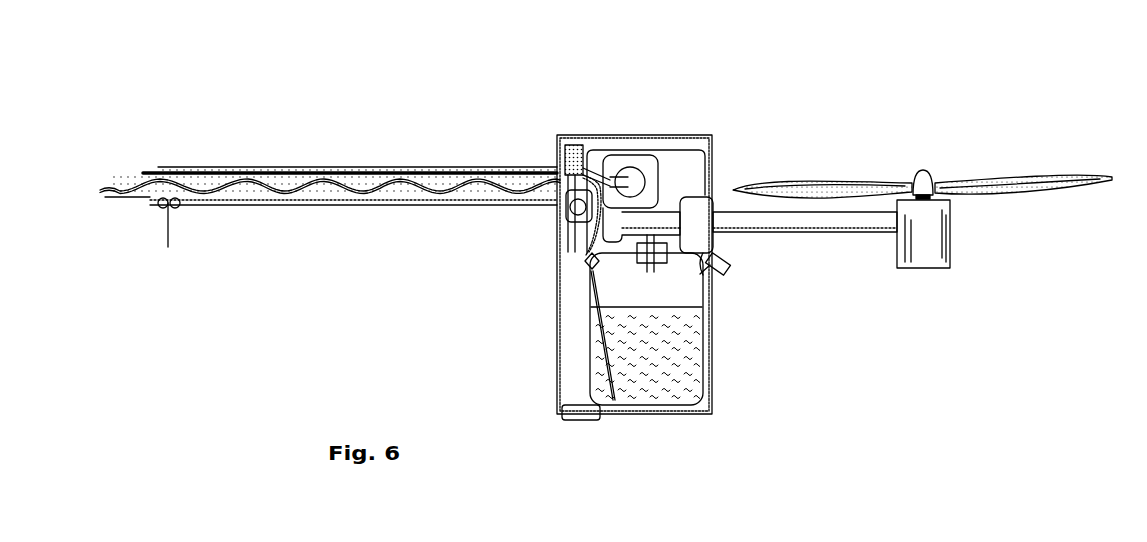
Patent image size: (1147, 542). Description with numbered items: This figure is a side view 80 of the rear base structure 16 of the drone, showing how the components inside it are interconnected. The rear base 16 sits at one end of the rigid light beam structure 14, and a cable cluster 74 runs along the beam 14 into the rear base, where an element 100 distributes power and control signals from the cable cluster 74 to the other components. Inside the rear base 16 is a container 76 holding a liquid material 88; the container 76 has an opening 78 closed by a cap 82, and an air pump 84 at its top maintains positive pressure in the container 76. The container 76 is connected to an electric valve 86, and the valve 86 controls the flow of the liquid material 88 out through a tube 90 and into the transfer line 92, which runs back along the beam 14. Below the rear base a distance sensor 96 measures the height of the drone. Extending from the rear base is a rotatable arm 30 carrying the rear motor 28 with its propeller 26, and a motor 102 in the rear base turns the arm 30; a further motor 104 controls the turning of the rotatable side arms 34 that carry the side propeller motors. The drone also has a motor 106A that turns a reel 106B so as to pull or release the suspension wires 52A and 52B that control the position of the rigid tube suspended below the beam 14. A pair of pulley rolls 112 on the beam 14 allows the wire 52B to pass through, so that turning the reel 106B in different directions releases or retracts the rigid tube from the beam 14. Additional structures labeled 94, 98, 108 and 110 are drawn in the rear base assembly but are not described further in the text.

The beam structure 14 is at (372, 166).
The rear base structure 16 is at (712, 386).
The propeller 26 is at (997, 177).
The rear motor 28 is at (952, 228).
The arm 30 is at (874, 235).
The side arms 34 is at (692, 150).
The suspension wire 52A is at (122, 198).
The suspension wire 52B is at (168, 247).
The cable cluster 74 is at (150, 169).
The container 76 is at (573, 374).
The opening 78 is at (717, 292).
The side view 80 is at (552, 72).
The cap 82 is at (730, 269).
The air pump 84 is at (577, 243).
The electric valve 86 is at (577, 299).
The liquid material 88 is at (699, 350).
The tube 90 is at (580, 340).
The transfer line 92 is at (111, 183).
The valve 94 is at (577, 264).
The distance sensor 96 is at (578, 421).
The capacitor 98 is at (557, 384).
The element 100 is at (570, 149).
The motor 102 is at (717, 253).
The motor 104 is at (648, 154).
The motor 106A is at (580, 150).
The reel 106B is at (602, 160).
The coupler 108 is at (712, 193).
The drive bar 110 is at (710, 189).
The pulley rolls 112 is at (180, 206).